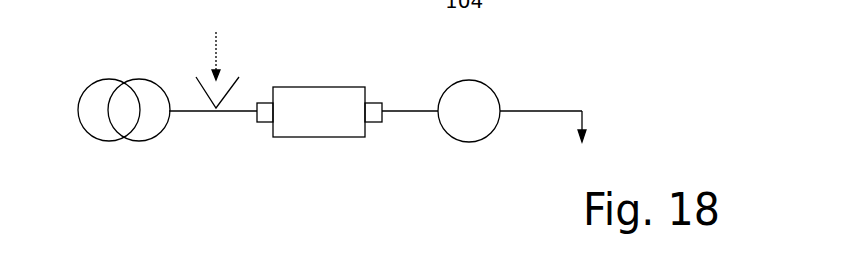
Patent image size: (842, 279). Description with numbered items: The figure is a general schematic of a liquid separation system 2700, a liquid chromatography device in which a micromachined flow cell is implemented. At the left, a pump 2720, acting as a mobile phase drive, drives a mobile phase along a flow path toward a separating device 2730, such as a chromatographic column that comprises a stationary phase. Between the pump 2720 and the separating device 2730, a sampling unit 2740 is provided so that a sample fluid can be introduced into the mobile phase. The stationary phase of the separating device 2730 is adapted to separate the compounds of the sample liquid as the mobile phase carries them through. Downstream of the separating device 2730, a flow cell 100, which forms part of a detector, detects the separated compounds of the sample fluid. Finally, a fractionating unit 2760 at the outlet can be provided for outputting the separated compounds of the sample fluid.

The flow cell 100 is at (476, 118).
The liquid separation system 2700 is at (626, 69).
The pump 2720 is at (124, 122).
The separating device 2730 is at (332, 120).
The sampling unit 2740 is at (227, 82).
The fractionating unit 2760 is at (584, 121).